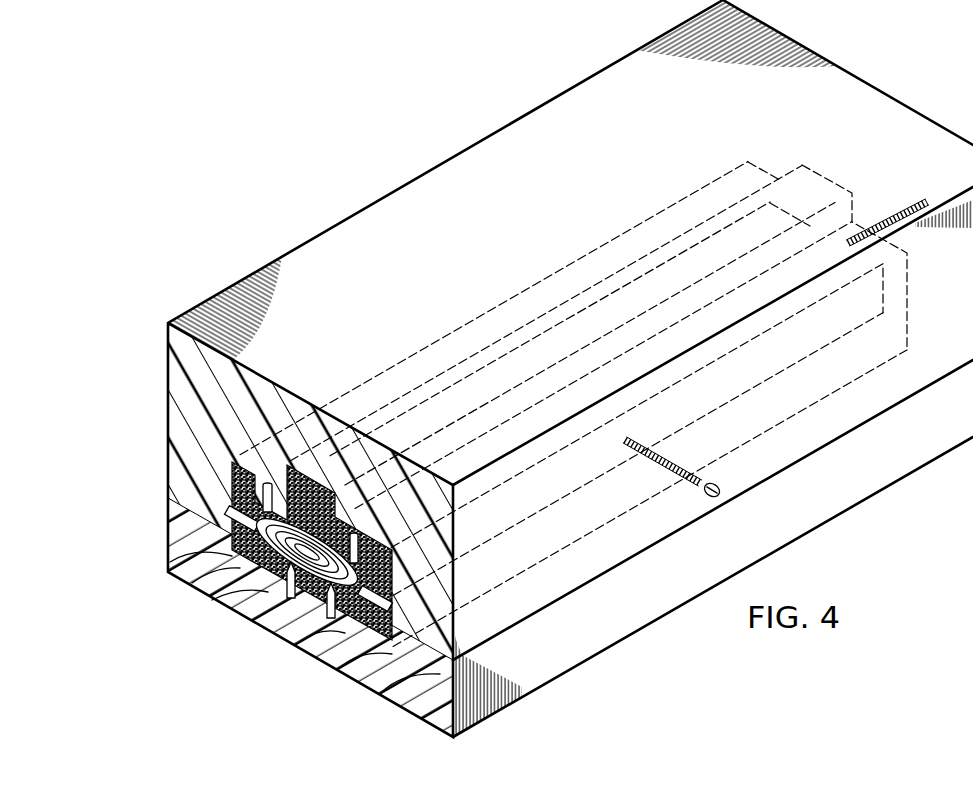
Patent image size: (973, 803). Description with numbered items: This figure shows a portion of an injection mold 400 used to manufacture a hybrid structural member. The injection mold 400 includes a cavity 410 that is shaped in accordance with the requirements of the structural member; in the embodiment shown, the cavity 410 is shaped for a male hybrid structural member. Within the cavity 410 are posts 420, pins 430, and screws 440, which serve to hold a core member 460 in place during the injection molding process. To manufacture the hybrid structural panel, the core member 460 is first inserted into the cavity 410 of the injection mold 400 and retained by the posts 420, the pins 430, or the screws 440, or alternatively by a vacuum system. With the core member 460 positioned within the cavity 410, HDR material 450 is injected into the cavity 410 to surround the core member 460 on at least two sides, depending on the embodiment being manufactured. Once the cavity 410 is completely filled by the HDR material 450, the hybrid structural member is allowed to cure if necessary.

The injection mold 400 is at (484, 153).
The cavity 410 is at (383, 660).
The posts 420 is at (262, 585).
The pins 430 is at (328, 622).
The screws 440 is at (930, 197).
The HDR material 450 is at (205, 579).
The core member 460 is at (188, 538).